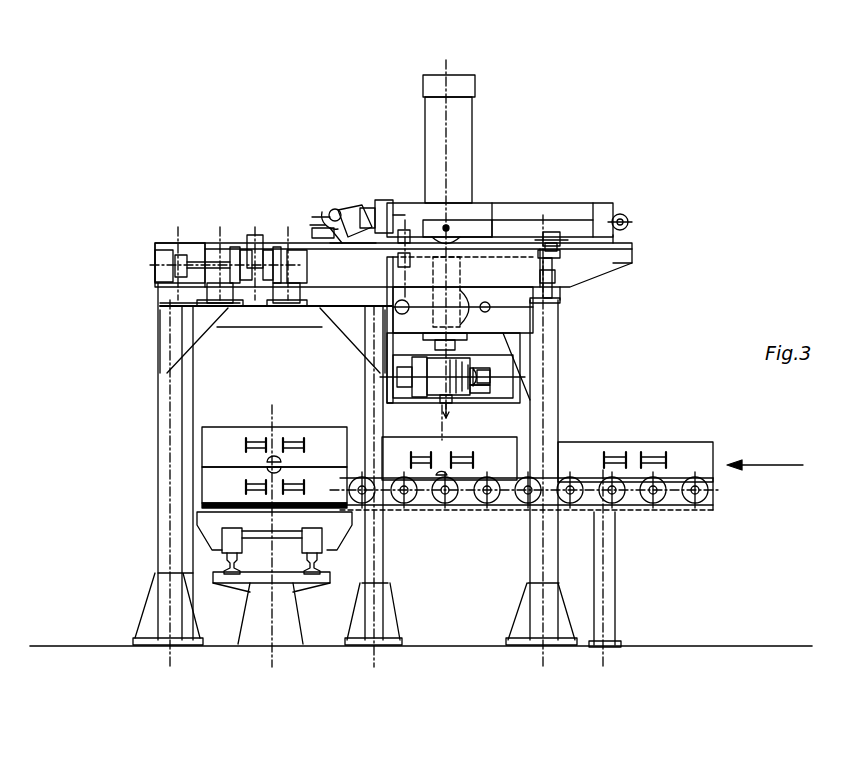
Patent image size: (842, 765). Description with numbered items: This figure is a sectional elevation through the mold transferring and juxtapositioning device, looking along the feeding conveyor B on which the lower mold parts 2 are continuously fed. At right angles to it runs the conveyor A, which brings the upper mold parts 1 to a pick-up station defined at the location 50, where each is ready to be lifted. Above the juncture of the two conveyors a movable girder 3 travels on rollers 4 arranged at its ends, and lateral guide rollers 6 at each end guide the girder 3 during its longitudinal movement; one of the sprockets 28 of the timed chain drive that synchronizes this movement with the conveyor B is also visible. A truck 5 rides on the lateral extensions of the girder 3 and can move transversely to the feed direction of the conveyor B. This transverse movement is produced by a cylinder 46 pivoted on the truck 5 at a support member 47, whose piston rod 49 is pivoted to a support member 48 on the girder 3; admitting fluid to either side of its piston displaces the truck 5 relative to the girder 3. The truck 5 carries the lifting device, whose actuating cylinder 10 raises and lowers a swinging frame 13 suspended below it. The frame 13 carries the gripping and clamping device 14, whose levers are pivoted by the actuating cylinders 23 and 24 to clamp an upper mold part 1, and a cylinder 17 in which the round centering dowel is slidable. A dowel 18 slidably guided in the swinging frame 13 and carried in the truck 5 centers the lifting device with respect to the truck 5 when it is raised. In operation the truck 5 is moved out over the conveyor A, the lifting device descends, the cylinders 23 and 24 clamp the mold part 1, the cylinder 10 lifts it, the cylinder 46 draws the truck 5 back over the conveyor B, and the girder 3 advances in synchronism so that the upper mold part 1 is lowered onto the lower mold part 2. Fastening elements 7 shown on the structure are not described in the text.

The upper mold part 1 is at (218, 440).
The lower mold part 2 is at (218, 485).
The girder 3 is at (540, 303).
The rollers 4 is at (163, 292).
The truck 5 is at (563, 242).
The lateral guide rollers 6 is at (160, 285).
The bolt 7 is at (320, 230).
The actuating cylinder 10 is at (460, 175).
The swinging frame 13 is at (517, 390).
The gripping and clamping device 14 is at (480, 383).
The cylinder 17 is at (497, 280).
The dowel 18 is at (390, 243).
The actuating cylinder 23 is at (477, 385).
The actuating cylinder 24 is at (455, 315).
The sprocket 28 is at (233, 303).
The cylinder 46 is at (508, 212).
The support member 47 is at (622, 237).
The support member 48 is at (333, 212).
The piston rod 49 is at (360, 213).
The pick-up station 50 is at (475, 385).
The conveyor A is at (667, 500).
The feeding conveyor B is at (218, 522).